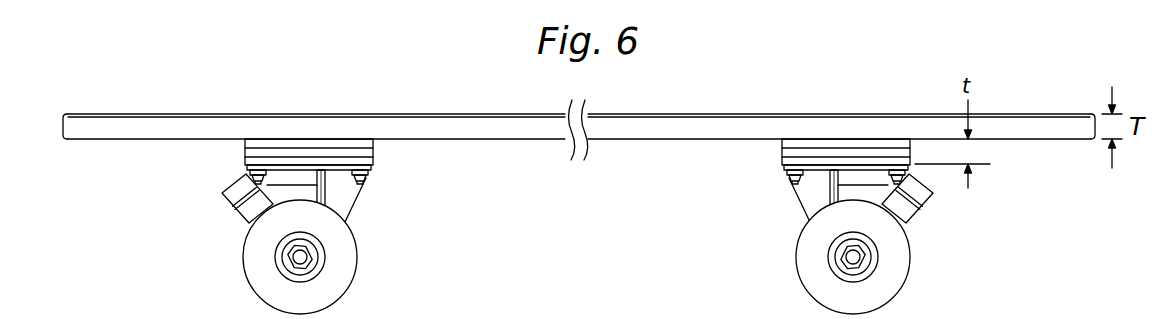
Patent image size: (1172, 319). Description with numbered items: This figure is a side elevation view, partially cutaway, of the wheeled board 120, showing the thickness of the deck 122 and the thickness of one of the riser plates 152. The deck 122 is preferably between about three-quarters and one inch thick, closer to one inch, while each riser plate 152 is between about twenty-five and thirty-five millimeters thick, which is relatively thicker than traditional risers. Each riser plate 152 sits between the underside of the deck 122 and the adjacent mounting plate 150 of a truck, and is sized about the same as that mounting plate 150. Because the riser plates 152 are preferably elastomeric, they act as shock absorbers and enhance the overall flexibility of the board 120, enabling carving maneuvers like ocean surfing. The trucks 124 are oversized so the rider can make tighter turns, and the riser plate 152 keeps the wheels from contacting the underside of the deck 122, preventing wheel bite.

The wheeled board 120 is at (272, 63).
The deck 122 is at (447, 115).
The trucks 124 is at (797, 198).
The mounting plate 150 is at (342, 175).
The riser plate 152 is at (245, 152).